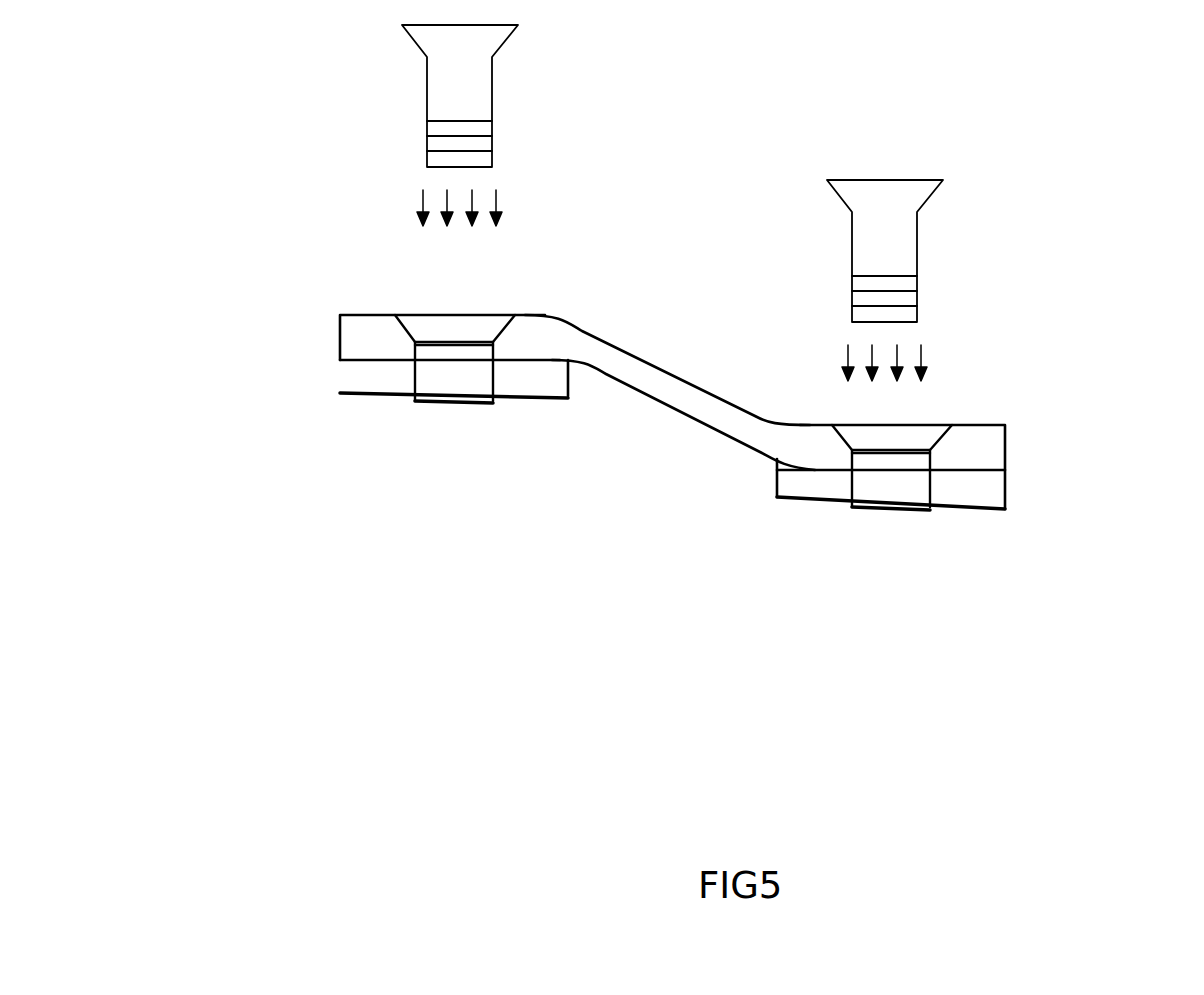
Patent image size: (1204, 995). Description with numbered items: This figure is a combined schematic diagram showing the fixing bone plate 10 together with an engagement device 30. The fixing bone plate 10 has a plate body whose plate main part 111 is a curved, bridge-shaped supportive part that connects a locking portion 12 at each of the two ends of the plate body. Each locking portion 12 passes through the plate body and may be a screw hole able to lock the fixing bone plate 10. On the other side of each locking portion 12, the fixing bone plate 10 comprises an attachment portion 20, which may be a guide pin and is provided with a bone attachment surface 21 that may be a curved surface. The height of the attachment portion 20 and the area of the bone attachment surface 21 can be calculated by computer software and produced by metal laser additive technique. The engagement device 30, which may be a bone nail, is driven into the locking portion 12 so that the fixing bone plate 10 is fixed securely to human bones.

The fixing bone plate 10 is at (672, 433).
The plate main part 111 is at (683, 390).
The locking portion 12 is at (412, 322).
The attachment portion 20 is at (377, 379).
The bone attachment surface 21 is at (468, 408).
The engagement device 30 is at (448, 74).